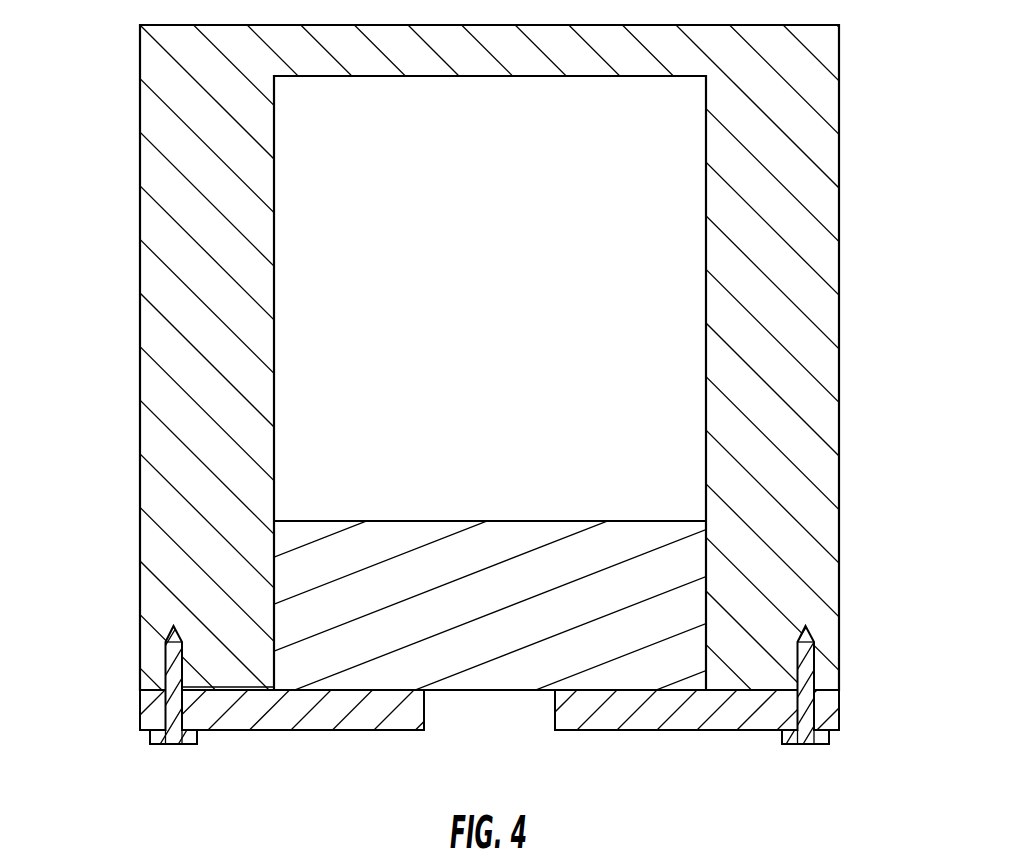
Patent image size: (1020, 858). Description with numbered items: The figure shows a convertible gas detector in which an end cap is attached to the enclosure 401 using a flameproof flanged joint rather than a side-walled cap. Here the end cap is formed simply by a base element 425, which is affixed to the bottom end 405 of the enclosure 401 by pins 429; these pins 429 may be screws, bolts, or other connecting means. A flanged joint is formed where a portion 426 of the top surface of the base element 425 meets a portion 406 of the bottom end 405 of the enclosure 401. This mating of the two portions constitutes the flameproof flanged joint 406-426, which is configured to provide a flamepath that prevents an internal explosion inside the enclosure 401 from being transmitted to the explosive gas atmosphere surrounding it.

The enclosure 401 is at (140, 279).
The bottom end 405 is at (140, 690).
The portion of bottom end 406 is at (720, 690).
The flameproof flanged joint 406-426 is at (226, 687).
The base element 425 is at (622, 712).
The portion of top surface of base element 426 is at (752, 692).
The pins 429 is at (815, 737).